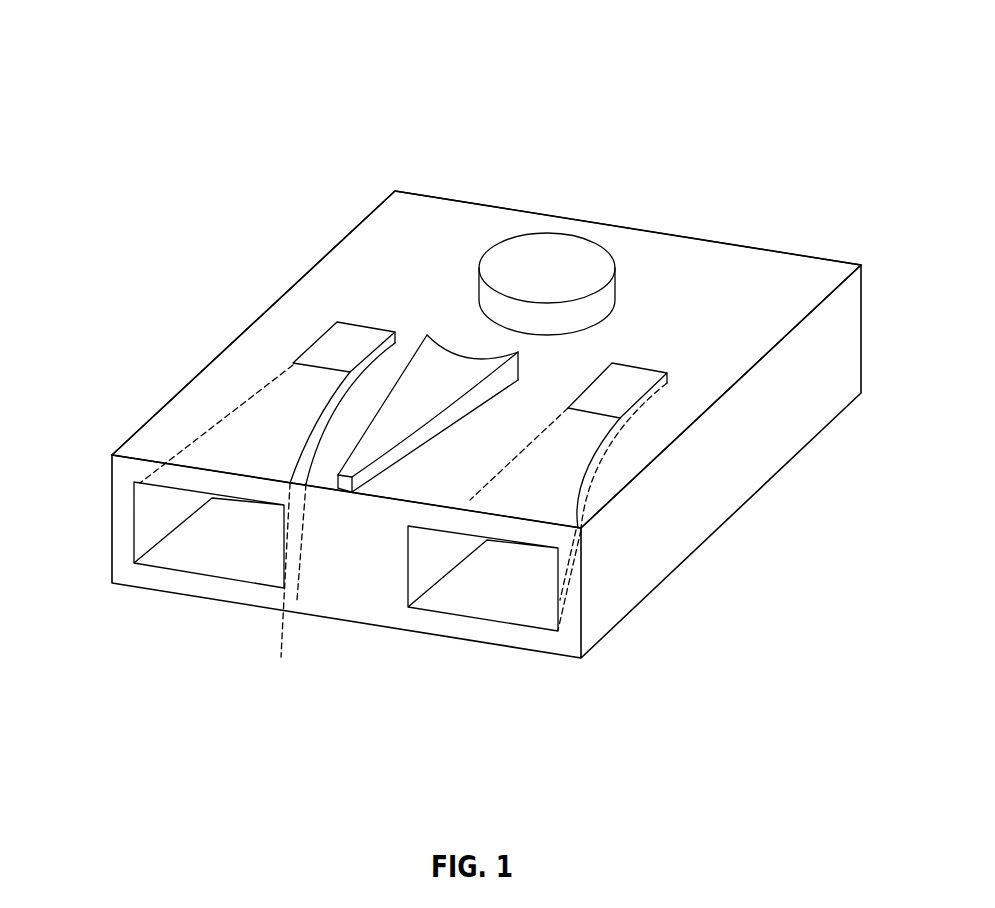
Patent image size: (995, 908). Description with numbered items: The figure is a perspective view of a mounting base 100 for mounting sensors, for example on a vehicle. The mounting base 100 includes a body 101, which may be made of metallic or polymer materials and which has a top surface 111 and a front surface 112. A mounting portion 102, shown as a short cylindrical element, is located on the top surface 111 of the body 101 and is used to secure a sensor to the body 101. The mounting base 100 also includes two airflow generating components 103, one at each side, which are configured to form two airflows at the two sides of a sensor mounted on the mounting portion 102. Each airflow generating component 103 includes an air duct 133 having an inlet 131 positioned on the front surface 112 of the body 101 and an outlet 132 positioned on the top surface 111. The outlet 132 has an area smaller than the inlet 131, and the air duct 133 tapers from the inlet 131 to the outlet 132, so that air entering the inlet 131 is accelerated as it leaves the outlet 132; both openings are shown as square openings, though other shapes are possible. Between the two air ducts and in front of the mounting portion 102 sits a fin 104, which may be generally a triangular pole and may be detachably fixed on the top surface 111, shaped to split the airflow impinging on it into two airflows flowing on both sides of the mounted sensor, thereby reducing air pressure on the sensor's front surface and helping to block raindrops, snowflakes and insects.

The mounting base 100 is at (207, 105).
The body 101 is at (722, 327).
The top surface 111 is at (645, 263).
The front surface 112 is at (398, 577).
The inlet 131 is at (167, 511).
The mounting portion 102 is at (515, 317).
The airflow generating component 103 is at (238, 440).
The fin 104 is at (423, 408).
The outlet 132 is at (342, 355).
The air duct 133 is at (272, 438).